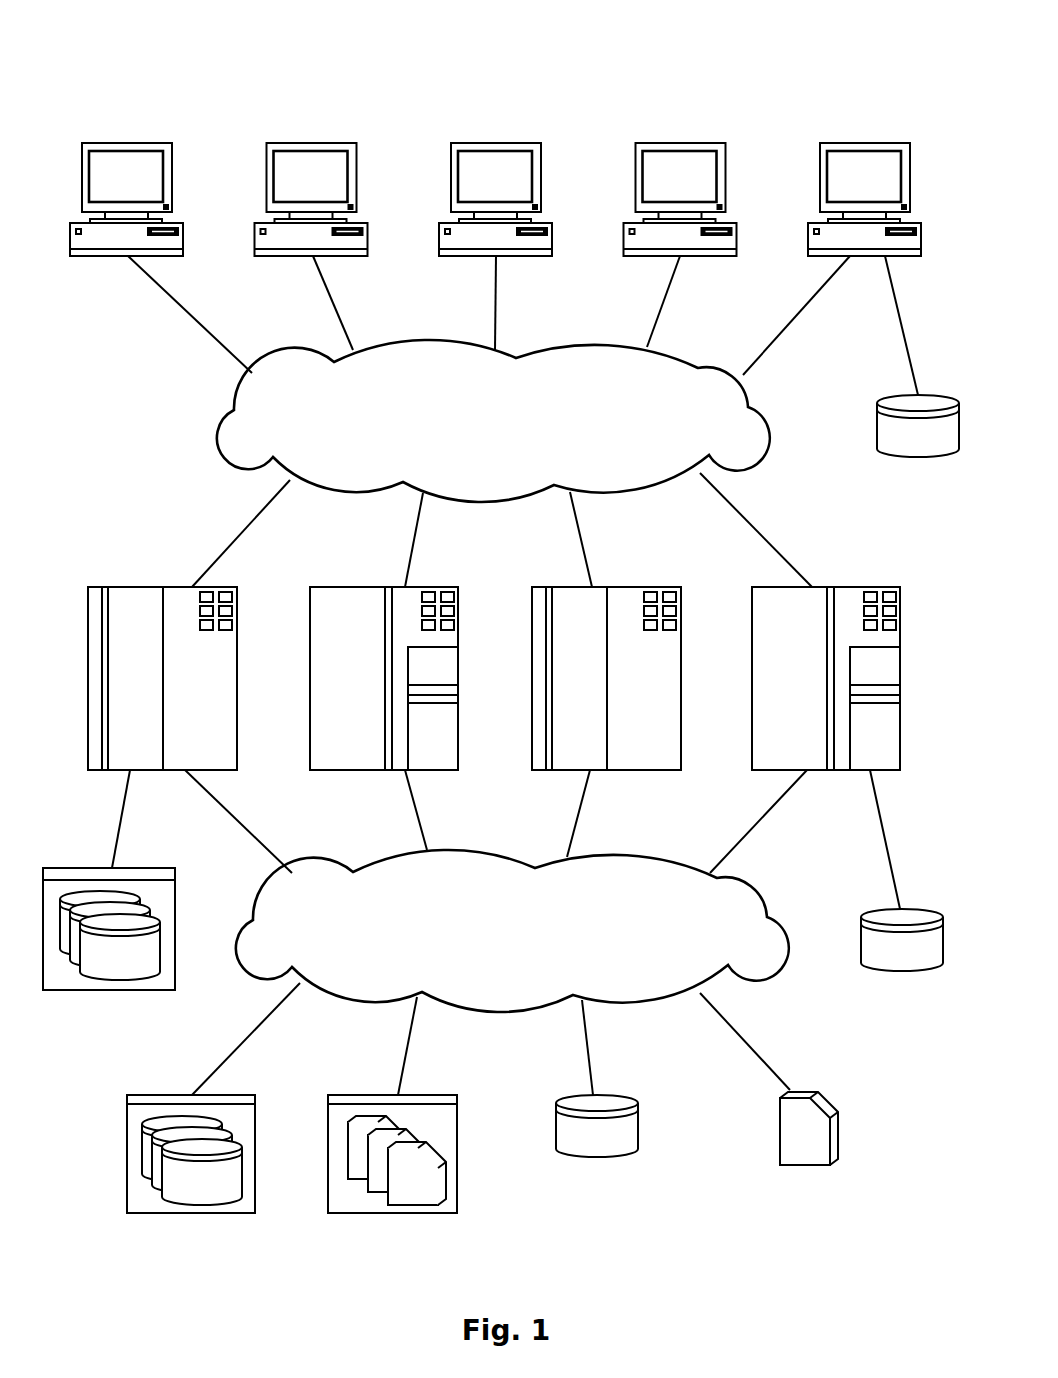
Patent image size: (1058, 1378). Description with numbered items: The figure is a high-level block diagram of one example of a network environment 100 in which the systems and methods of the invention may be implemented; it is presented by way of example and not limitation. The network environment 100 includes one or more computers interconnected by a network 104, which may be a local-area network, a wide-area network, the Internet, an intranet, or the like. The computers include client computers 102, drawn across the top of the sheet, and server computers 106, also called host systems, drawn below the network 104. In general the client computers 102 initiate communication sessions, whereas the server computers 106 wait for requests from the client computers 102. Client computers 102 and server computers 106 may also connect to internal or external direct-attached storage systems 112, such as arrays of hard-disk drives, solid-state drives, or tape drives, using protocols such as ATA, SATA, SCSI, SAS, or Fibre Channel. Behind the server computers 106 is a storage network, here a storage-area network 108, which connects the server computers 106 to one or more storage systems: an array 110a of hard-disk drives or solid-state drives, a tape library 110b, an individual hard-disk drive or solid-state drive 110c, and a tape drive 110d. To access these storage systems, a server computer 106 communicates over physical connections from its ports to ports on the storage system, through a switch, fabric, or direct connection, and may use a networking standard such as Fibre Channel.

The network environment 100 is at (200, 66).
The client computer 102 is at (106, 187).
The network 104 is at (645, 438).
The server computer 106 is at (117, 686).
The storage-area-network (SAN) 108 is at (624, 944).
The array of hard-disk drives or solid-state drives 110a is at (190, 1213).
The tape library 110b is at (393, 1213).
The individual hard-disk drive or solid-state drive 110c is at (597, 1152).
The tape drive 110d is at (805, 1165).
The direct-attached storage system 112 is at (918, 457).